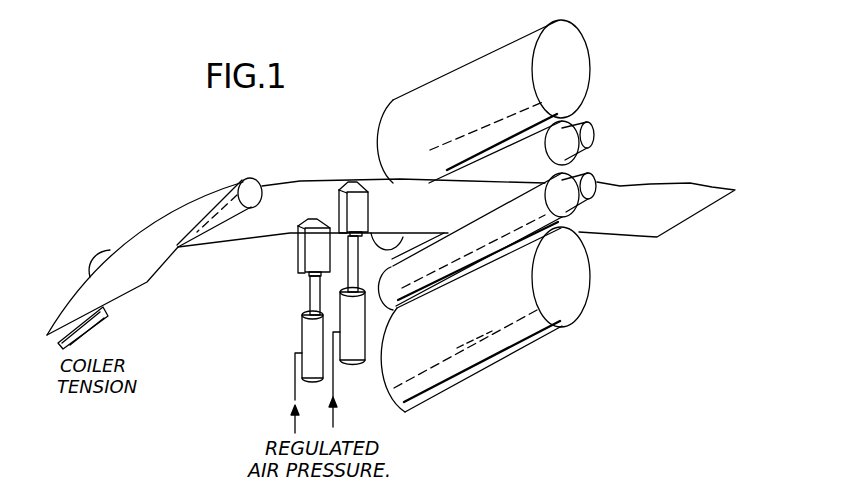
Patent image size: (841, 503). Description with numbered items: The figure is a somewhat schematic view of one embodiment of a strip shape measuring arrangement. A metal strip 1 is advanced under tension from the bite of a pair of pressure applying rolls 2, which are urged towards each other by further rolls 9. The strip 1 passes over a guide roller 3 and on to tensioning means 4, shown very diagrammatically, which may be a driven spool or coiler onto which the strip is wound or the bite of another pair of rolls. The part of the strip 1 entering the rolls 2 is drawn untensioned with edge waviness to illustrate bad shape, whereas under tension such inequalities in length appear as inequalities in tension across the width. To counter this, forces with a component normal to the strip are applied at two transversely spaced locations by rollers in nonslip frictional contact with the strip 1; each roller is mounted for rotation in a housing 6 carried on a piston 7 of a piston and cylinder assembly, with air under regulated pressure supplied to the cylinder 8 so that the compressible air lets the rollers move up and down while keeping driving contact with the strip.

The metal strip 1 is at (403, 222).
The pressure applying rolls 2 is at (514, 175).
The guide roller 3 is at (236, 184).
The tensioning means 4 is at (108, 315).
The housing 6 is at (362, 221).
The piston 7 is at (350, 283).
The cylinder 8 is at (343, 320).
The further rolls 9 is at (503, 102).